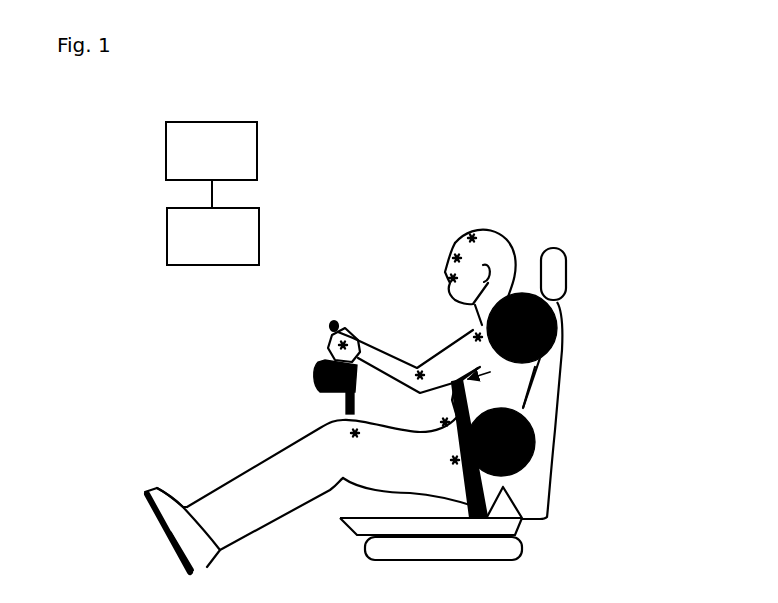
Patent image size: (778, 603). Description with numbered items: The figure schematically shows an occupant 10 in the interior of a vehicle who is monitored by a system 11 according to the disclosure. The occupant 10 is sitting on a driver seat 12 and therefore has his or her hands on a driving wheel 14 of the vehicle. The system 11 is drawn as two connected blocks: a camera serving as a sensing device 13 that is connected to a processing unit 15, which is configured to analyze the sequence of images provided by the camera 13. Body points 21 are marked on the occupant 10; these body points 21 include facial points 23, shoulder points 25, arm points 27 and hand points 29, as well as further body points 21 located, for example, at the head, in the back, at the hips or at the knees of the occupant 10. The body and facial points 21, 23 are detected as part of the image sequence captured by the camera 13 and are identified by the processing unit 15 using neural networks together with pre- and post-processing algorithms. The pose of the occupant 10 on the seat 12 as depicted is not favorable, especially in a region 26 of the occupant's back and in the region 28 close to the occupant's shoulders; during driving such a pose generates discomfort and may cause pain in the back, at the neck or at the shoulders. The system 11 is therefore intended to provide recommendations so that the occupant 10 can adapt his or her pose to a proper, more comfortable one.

The occupant 10 is at (489, 168).
The system 11 is at (125, 190).
The driver seat 12 is at (545, 405).
The sensing device 13 is at (183, 253).
The driving wheel 14 is at (348, 403).
The processing unit 15 is at (230, 126).
The body points 21 is at (480, 220).
The facial points 23 is at (435, 275).
The shoulder points 25 is at (466, 327).
The region of the occupant's back 26 is at (534, 464).
The arm points 27 is at (410, 352).
The region close to the occupant's shoulders 28 is at (534, 297).
The hand points 29 is at (324, 347).